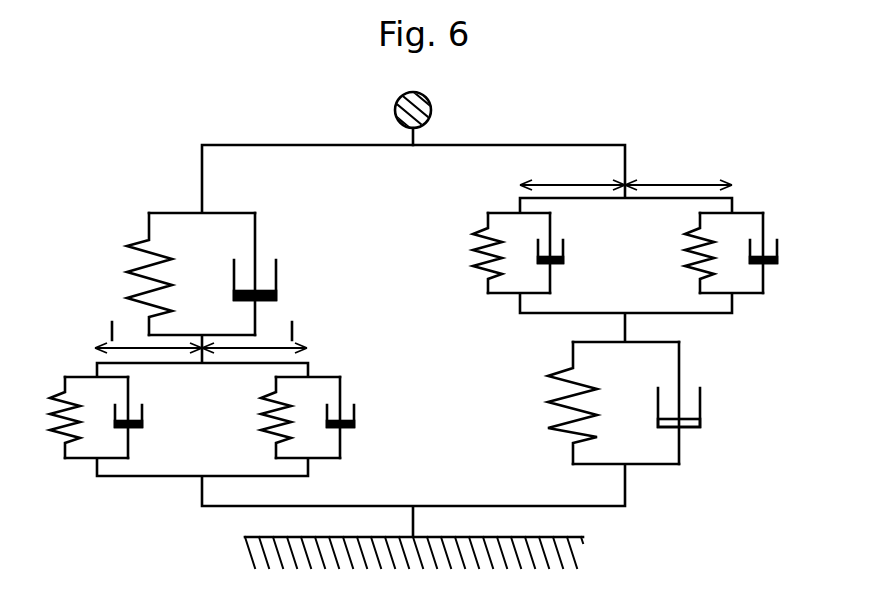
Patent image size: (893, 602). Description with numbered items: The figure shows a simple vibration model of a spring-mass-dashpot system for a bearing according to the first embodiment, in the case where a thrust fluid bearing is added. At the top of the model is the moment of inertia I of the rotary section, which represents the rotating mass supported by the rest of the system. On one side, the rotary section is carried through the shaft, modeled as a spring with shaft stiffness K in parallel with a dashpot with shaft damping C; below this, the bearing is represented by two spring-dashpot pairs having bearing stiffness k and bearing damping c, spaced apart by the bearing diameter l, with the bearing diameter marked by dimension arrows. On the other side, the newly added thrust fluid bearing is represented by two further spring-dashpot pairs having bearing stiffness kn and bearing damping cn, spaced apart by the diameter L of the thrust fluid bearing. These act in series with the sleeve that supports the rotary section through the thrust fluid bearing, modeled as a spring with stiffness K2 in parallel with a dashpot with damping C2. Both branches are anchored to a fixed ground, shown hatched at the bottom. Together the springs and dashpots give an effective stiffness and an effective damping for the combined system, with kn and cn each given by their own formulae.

The moment of inertia of the rotary section I is at (421, 114).
The shaft stiffness K is at (133, 274).
The shaft damping C is at (272, 274).
The bearing diameter l is at (201, 337).
The bearing stiffness k is at (159, 417).
The bearing damping c is at (249, 417).
The diameter of the thrust fluid bearing L is at (626, 172).
The bearing stiffness of the thrust fluid bearing kn is at (577, 253).
The bearing damping of the thrust fluid bearing cn is at (676, 253).
The stiffness of the sleeve K2 is at (550, 403).
The damping of the sleeve C2 is at (702, 403).